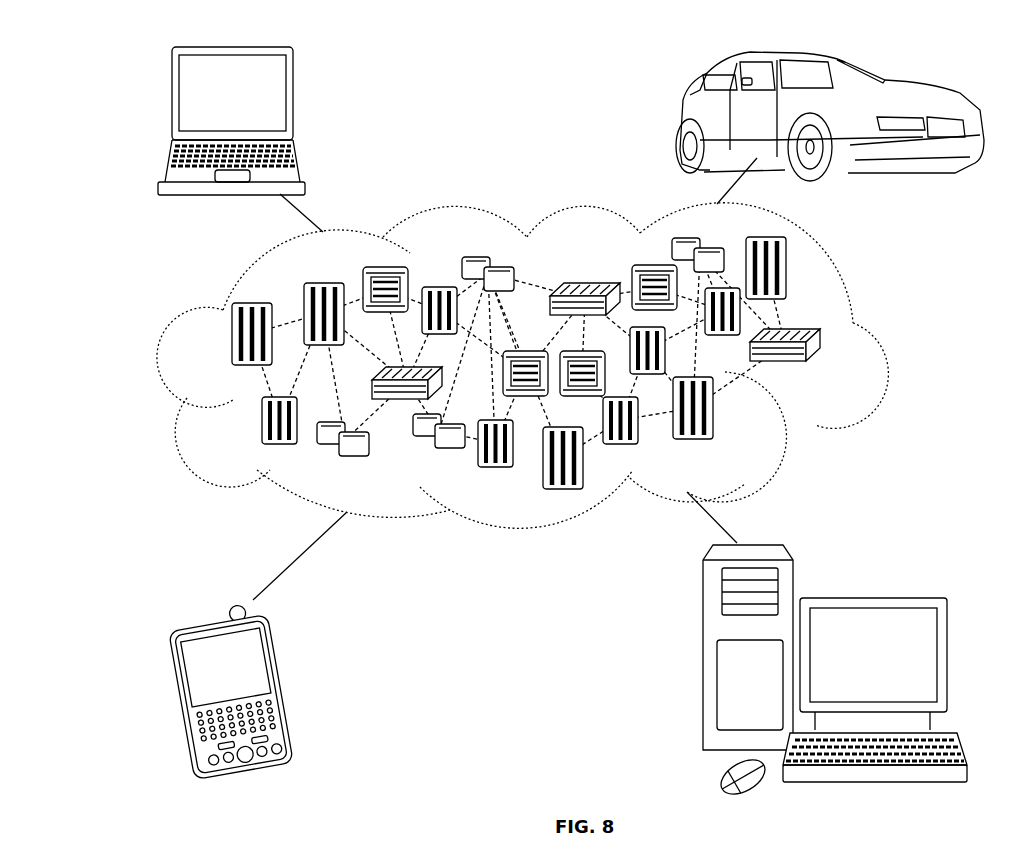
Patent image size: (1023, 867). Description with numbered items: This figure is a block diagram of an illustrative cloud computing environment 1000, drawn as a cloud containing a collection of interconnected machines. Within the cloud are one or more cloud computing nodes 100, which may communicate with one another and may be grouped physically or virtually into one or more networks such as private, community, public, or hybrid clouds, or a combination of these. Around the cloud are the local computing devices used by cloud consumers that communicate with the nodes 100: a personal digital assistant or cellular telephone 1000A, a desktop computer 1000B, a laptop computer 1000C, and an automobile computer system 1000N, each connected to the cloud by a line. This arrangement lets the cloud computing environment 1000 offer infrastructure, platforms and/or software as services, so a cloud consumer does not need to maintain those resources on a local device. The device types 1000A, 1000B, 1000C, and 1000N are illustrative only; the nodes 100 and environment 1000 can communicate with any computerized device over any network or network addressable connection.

The cloud computing environment 1000 is at (873, 348).
The cloud computing nodes 100 is at (828, 374).
The personal digital assistant or cellular telephone 1000A is at (283, 681).
The desktop computer 1000B is at (870, 597).
The laptop computer 1000C is at (295, 103).
The automobile computer system 1000N is at (680, 113).